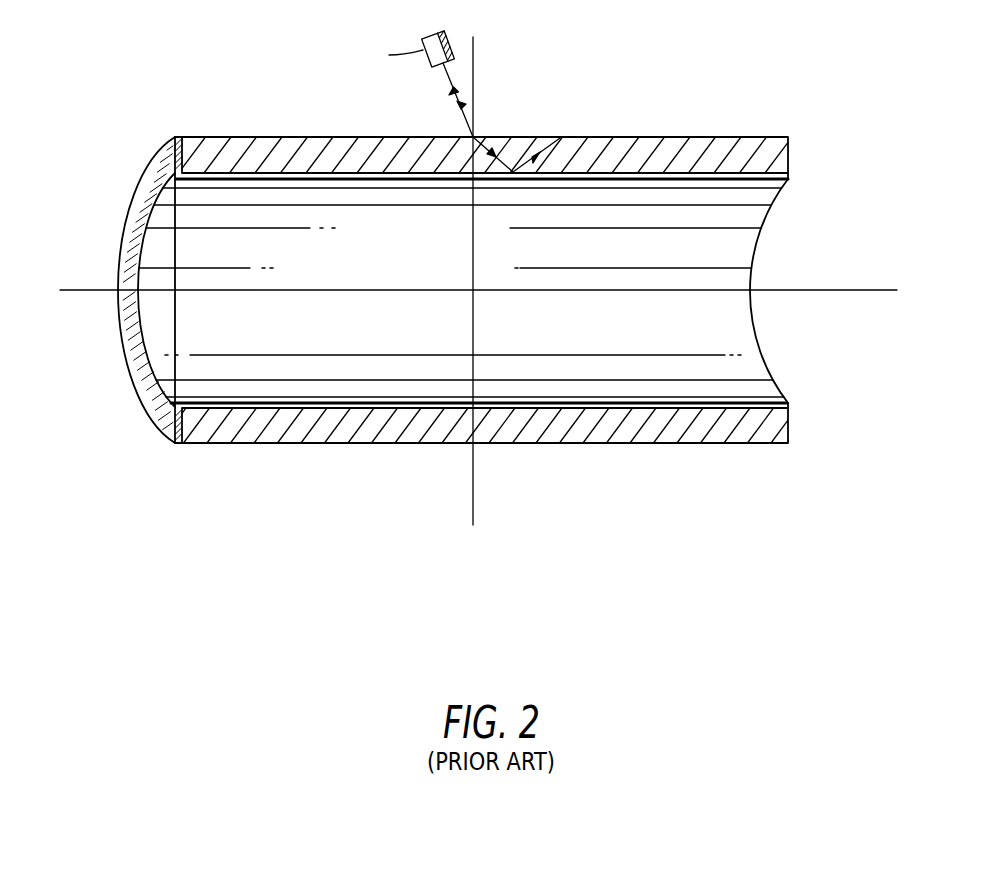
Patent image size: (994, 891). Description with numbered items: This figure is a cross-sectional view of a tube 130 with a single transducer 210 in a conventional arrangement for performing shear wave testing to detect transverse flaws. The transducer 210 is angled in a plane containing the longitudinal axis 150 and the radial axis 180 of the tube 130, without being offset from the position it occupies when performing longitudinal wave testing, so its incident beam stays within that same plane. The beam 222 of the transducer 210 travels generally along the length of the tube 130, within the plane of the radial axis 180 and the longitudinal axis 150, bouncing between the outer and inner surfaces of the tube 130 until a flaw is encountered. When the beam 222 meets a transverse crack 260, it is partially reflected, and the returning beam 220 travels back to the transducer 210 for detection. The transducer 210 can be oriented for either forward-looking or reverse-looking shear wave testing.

The tube 130 is at (285, 446).
The longitudinal axis 150 is at (773, 293).
The radial axis 180 is at (473, 228).
The transducer 210 is at (438, 70).
The beam 220 is at (452, 101).
The beam 222 is at (493, 153).
The transverse crack 260 is at (562, 140).